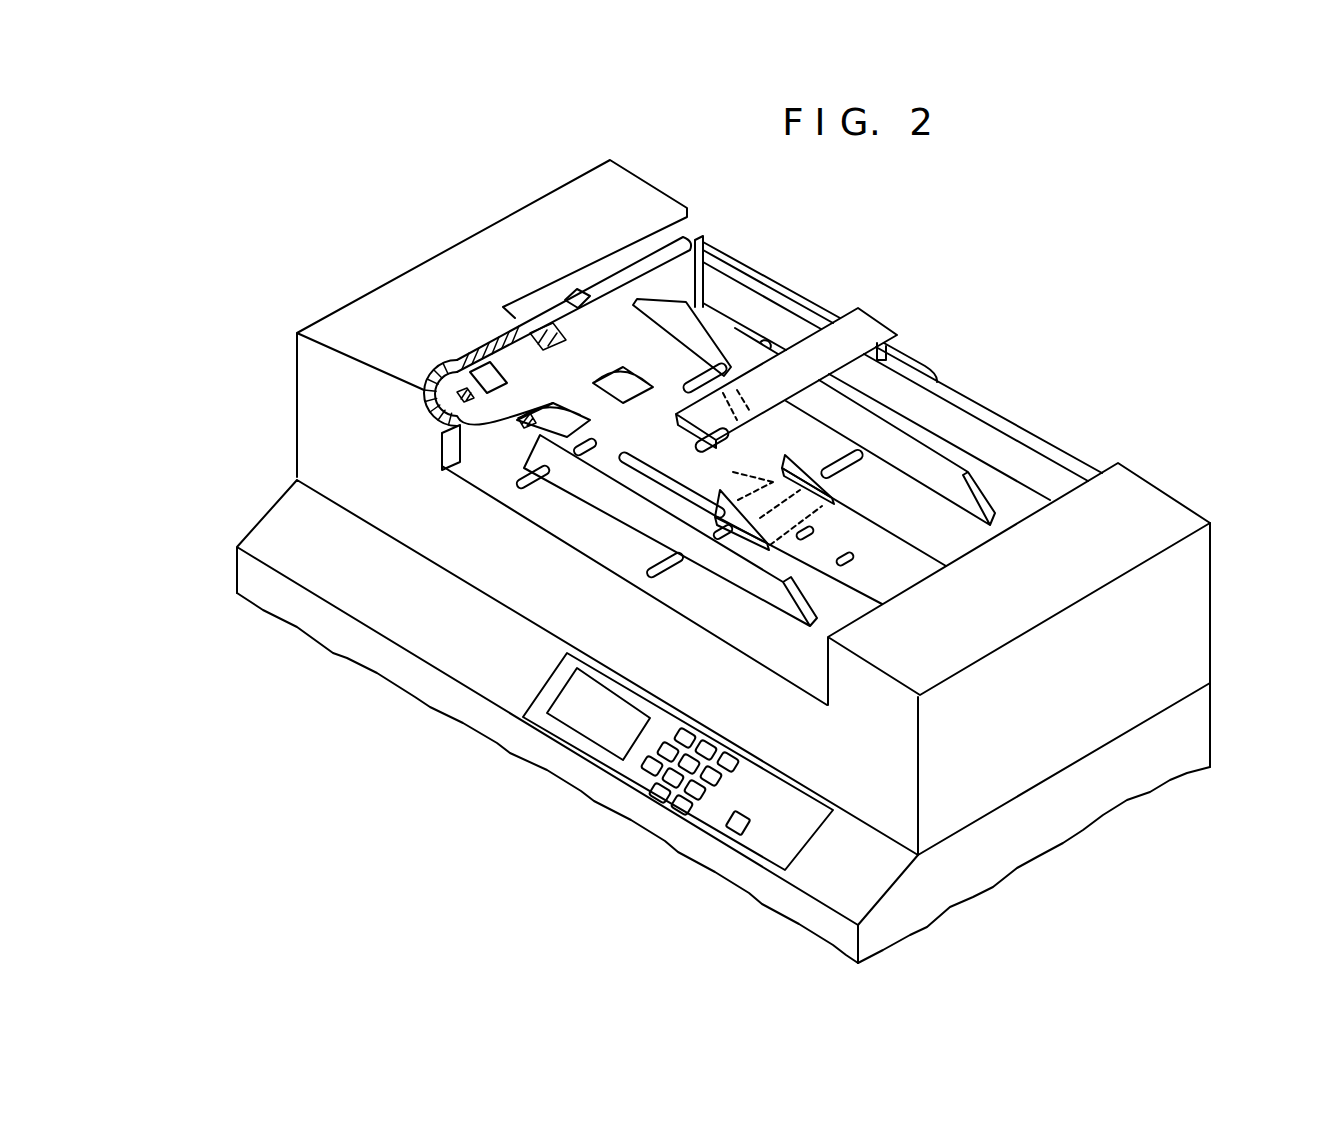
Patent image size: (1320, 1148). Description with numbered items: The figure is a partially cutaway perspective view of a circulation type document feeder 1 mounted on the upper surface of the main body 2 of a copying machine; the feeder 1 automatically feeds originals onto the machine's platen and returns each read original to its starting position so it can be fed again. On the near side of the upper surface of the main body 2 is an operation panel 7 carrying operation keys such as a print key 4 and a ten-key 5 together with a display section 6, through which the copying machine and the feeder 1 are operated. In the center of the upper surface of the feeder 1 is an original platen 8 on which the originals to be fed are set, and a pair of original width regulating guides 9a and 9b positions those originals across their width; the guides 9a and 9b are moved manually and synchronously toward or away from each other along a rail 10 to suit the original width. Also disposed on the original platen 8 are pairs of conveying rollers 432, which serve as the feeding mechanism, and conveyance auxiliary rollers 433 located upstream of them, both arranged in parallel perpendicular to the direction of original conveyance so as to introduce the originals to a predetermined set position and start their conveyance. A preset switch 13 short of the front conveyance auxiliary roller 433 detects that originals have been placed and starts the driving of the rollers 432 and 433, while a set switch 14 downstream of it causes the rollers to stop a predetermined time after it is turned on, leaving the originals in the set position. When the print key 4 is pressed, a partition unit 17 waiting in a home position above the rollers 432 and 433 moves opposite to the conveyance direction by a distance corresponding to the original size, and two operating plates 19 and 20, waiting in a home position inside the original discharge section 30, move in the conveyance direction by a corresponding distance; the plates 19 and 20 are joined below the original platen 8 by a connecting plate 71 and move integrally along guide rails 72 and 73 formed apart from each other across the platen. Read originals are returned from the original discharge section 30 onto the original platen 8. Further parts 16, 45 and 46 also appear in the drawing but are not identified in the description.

The circulation type document feeder 1 is at (821, 221).
The main body 2 is at (270, 527).
The print key 4 is at (752, 818).
The ten-key 5 is at (740, 784).
The display section 6 is at (577, 688).
The operation panel 7 is at (818, 838).
The original platen 8 is at (1008, 492).
The original width regulating guide 9a is at (610, 494).
The original width regulating guide 9b is at (935, 485).
The rail 10 is at (535, 482).
The preset switch 13 is at (520, 425).
The set switch 14 is at (460, 378).
The document sensor lever 16 is at (567, 290).
The partition unit 17 is at (904, 311).
The operating plate 19 is at (745, 505).
The operating plate 20 is at (786, 457).
The original discharge section 30 is at (1168, 472).
The sensor 45 is at (812, 534).
The sensor 46 is at (852, 560).
The connecting plate 71 is at (773, 482).
The guide rail 72 is at (836, 582).
The guide rail 73 is at (905, 548).
The conveying rollers 432 is at (487, 375).
The conveyance auxiliary rollers 433 is at (594, 381).